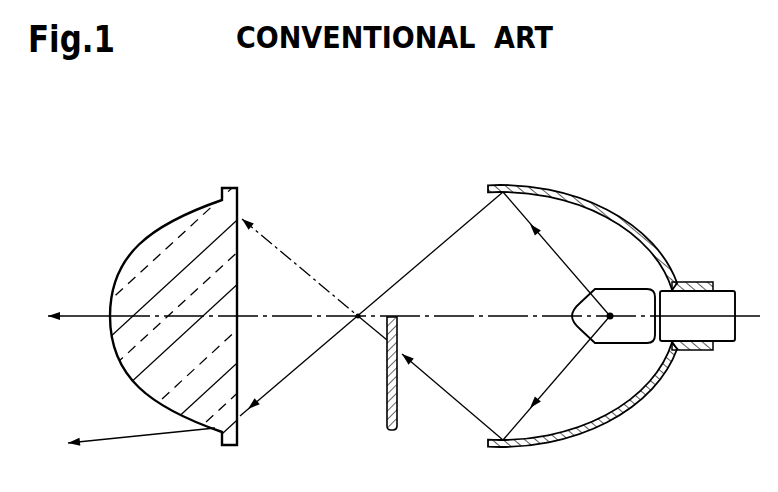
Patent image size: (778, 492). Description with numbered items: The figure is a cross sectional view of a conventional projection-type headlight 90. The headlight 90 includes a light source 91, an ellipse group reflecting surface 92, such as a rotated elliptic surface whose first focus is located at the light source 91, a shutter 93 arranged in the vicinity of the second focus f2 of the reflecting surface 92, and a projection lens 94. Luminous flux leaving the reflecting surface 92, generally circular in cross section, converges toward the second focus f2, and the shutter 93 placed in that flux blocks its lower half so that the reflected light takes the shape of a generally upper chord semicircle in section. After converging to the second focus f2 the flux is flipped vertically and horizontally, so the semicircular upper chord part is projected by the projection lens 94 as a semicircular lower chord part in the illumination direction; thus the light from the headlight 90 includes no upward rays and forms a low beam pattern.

The projection-type headlight 90 is at (620, 180).
The light source 91 is at (610, 316).
The ellipse group reflecting surface 92 is at (609, 411).
The shutter 93 is at (387, 412).
The projection lens 94 is at (157, 252).
The second focus f2 is at (358, 312).